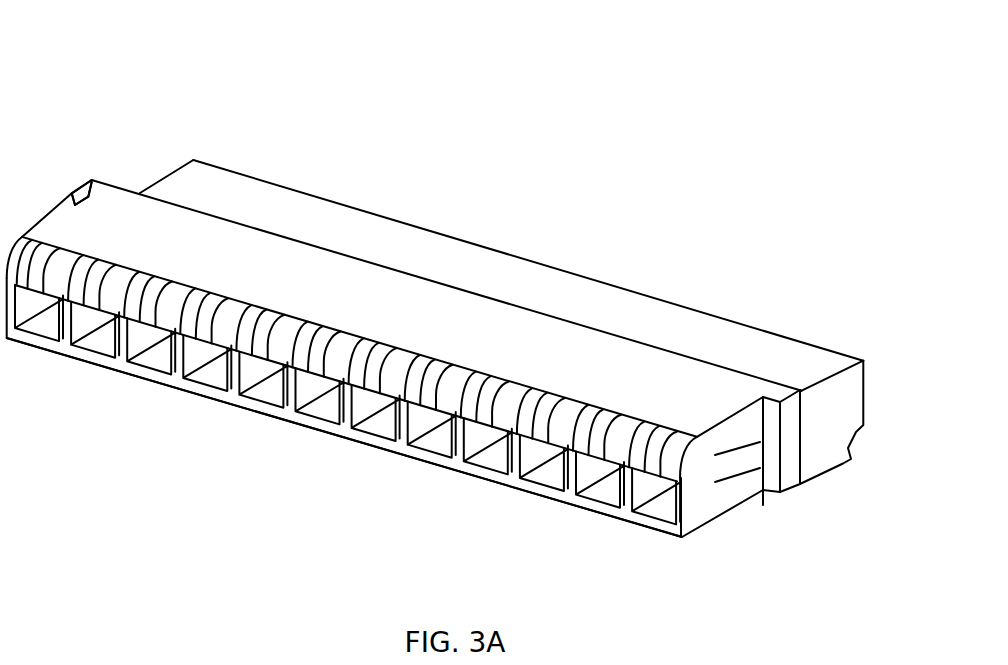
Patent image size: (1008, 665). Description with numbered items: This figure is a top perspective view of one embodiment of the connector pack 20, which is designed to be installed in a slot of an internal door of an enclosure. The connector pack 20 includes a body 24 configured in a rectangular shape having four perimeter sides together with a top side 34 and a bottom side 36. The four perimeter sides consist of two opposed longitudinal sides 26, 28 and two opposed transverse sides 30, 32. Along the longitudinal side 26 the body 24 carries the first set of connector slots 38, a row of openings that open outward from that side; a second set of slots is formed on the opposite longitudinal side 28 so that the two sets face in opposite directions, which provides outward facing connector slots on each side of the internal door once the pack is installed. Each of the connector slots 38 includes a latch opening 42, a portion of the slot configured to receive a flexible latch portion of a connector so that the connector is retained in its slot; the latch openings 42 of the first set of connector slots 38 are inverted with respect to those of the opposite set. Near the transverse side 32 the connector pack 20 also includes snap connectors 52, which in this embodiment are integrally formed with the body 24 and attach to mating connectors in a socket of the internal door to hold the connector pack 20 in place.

The connector pack 20 is at (134, 46).
The body 24 is at (330, 232).
The longitudinal side 26 is at (108, 362).
The longitudinal side 28 is at (620, 290).
The transverse side 30 is at (173, 172).
The transverse side 32 is at (752, 493).
The top side 34 is at (492, 278).
The bottom side 36 is at (797, 504).
The first set of connector slots 38 is at (370, 425).
The latch opening 42 is at (48, 250).
The snap connectors 52 is at (738, 480).